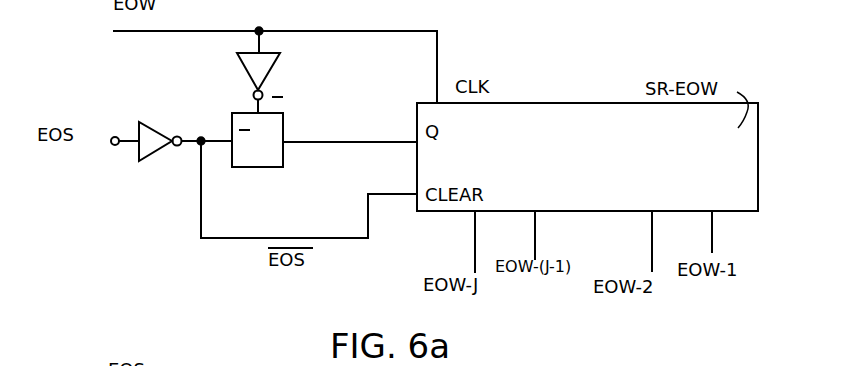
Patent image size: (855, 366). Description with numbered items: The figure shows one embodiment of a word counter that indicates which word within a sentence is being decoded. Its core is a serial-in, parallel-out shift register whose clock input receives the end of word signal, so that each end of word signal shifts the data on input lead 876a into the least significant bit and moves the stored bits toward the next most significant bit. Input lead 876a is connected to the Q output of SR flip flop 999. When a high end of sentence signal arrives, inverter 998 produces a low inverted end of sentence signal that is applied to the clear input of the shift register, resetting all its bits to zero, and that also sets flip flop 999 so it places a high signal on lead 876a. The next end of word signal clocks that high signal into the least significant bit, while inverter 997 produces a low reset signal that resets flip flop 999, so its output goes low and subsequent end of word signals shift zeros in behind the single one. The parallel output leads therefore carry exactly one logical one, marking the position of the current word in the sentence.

The inverter 997 is at (264, 86).
The inverter 998 is at (165, 150).
The SR flip flop 999 is at (270, 157).
The input lead 876a is at (396, 142).